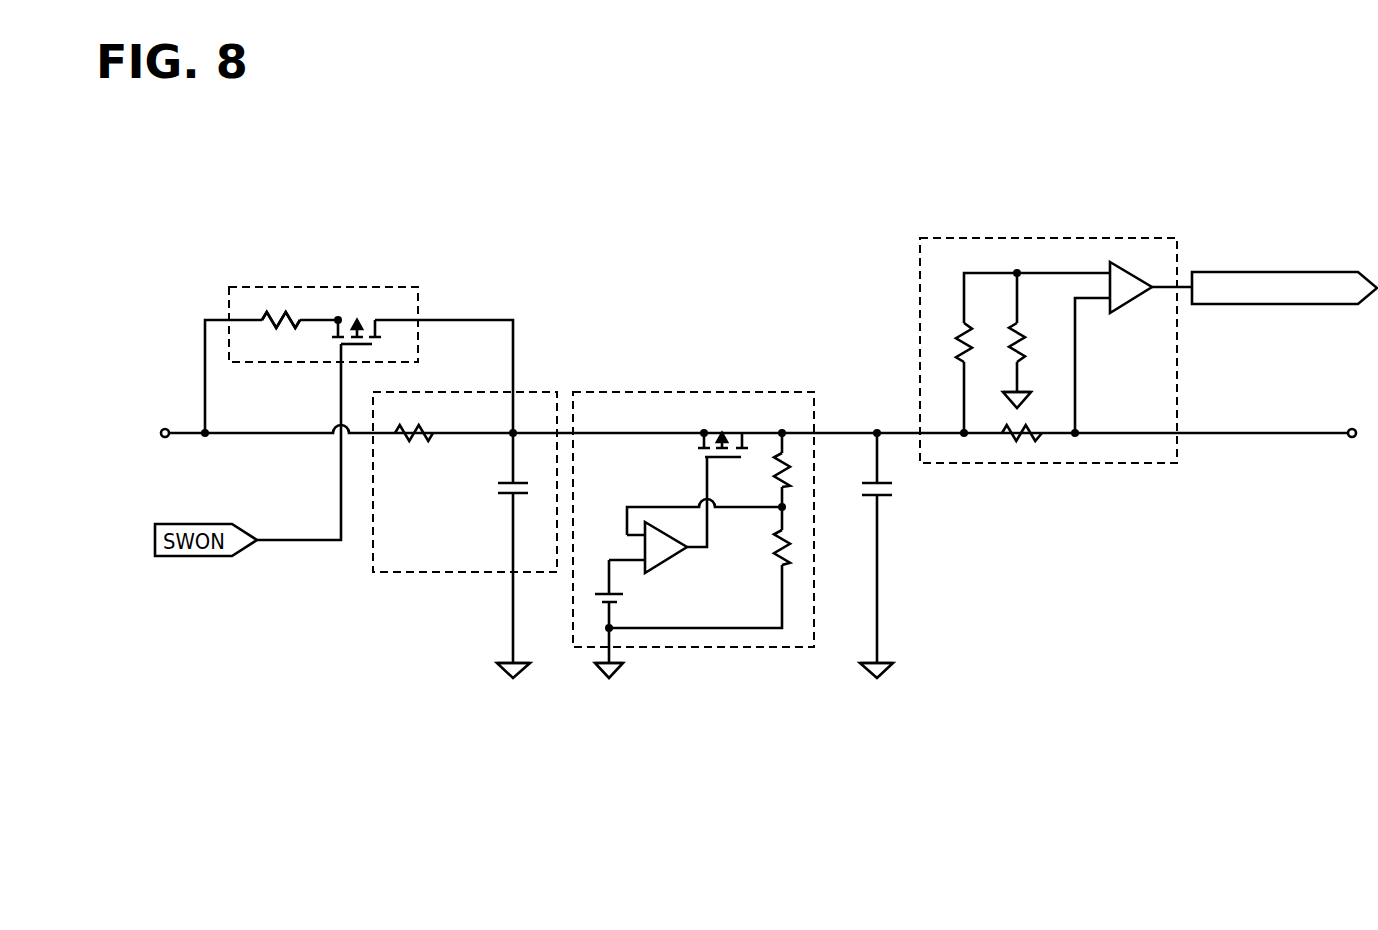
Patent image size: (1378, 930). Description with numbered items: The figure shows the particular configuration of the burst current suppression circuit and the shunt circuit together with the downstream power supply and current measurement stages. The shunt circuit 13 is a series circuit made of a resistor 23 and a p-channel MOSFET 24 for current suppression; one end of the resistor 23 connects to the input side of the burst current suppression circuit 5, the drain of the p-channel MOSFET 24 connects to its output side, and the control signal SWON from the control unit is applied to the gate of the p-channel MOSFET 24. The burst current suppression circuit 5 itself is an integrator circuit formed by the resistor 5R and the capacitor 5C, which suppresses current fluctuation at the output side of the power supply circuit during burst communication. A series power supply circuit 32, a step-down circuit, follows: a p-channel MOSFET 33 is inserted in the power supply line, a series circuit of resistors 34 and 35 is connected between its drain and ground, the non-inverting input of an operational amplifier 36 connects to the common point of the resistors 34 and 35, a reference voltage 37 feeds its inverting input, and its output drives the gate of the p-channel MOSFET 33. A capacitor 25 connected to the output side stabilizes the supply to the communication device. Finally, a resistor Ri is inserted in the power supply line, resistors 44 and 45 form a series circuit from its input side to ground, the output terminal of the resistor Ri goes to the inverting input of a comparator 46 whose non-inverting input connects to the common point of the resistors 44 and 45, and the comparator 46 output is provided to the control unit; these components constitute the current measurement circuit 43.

The shunt circuit 13 is at (340, 287).
The resistor 23 is at (278, 330).
The p-channel MOSFET 24 is at (352, 324).
The burst current suppression circuit 5 is at (465, 392).
The resistor 5R is at (410, 446).
The capacitor 5C is at (497, 485).
The series power supply circuit 32 is at (665, 392).
The p-channel MOSFET 33 is at (700, 446).
The resistor 34 is at (778, 477).
The resistor 35 is at (778, 541).
The operational amplifier 36 is at (672, 562).
The reference voltage 37 is at (621, 597).
The capacitor 25 is at (890, 490).
The current measurement circuit 43 is at (1025, 238).
The resistor 44 is at (958, 340).
The resistor 45 is at (1024, 340).
The resistor Ri is at (1030, 441).
The comparator 46 is at (1125, 305).